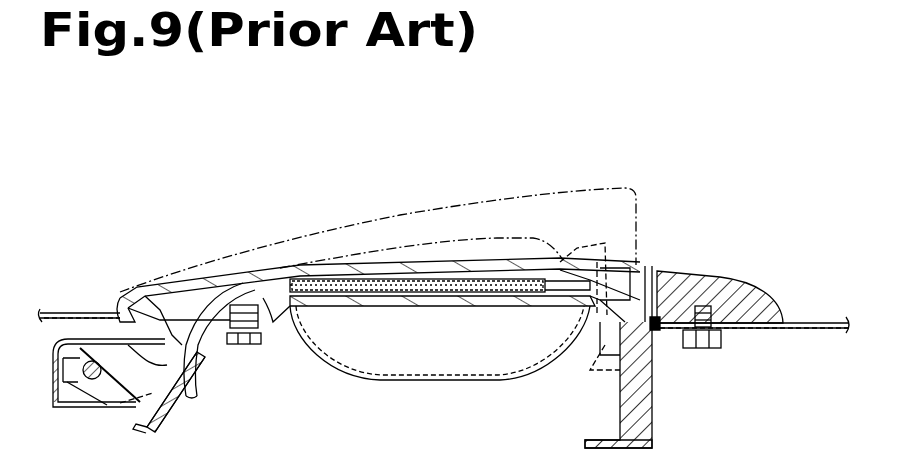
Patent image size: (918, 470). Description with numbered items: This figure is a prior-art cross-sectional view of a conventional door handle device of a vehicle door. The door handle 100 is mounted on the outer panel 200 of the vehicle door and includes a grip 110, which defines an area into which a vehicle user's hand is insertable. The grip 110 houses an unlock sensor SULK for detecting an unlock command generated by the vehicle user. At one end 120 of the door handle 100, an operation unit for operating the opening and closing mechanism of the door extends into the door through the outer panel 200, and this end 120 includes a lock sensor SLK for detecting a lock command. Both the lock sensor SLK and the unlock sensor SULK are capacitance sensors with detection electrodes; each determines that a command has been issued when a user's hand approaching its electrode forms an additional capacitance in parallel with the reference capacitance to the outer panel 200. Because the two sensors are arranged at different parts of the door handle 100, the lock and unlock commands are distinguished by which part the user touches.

The door handle 100 is at (515, 228).
The grip 110 is at (443, 300).
The end of the door handle 120 is at (640, 258).
The outer panel 200 is at (63, 313).
The unlock sensor SULK is at (470, 277).
The lock sensor SLK is at (597, 262).